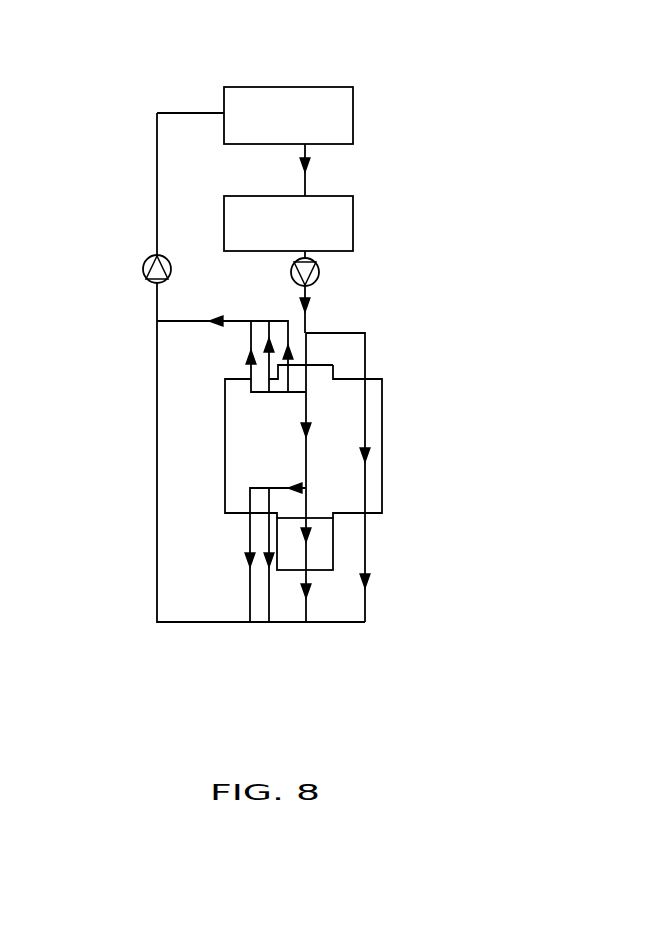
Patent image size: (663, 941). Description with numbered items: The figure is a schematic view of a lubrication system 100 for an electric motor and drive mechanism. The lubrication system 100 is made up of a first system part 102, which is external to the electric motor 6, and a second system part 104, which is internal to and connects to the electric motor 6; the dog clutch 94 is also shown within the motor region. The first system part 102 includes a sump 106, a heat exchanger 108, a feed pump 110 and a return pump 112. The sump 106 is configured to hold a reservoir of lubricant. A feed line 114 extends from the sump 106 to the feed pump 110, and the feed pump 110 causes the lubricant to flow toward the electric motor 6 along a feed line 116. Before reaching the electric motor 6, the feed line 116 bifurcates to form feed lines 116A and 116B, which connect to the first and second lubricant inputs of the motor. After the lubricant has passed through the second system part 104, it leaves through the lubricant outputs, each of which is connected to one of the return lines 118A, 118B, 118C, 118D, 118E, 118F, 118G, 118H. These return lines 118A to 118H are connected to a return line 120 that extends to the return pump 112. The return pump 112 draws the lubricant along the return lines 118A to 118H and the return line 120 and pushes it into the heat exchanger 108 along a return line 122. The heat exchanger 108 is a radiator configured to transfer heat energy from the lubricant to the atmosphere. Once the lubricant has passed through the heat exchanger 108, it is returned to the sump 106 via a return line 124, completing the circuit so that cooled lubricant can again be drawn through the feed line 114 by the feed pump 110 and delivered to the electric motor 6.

The lubrication system 100 is at (432, 99).
The first system part 102 is at (180, 172).
The second system part 104 is at (240, 409).
The sump 106 is at (330, 218).
The heat exchanger 108 is at (315, 102).
The feed pump 110 is at (318, 275).
The return pump 112 is at (142, 270).
The feed line 114 is at (313, 253).
The feed line 116 is at (308, 297).
The feed line 116A is at (306, 353).
The feed line 116B is at (368, 345).
The return line 118A is at (290, 325).
The return line 118B is at (271, 340).
The return line 118C is at (250, 367).
The return line 118D is at (167, 320).
The return line 118E is at (367, 602).
The return line 118F is at (305, 608).
The return line 118G is at (272, 605).
The return line 118H is at (250, 605).
The return line 120 is at (155, 302).
The return line 122 is at (155, 137).
The return line 124 is at (307, 177).
The electric motor 6 is at (383, 412).
The dog clutch 94 is at (322, 546).